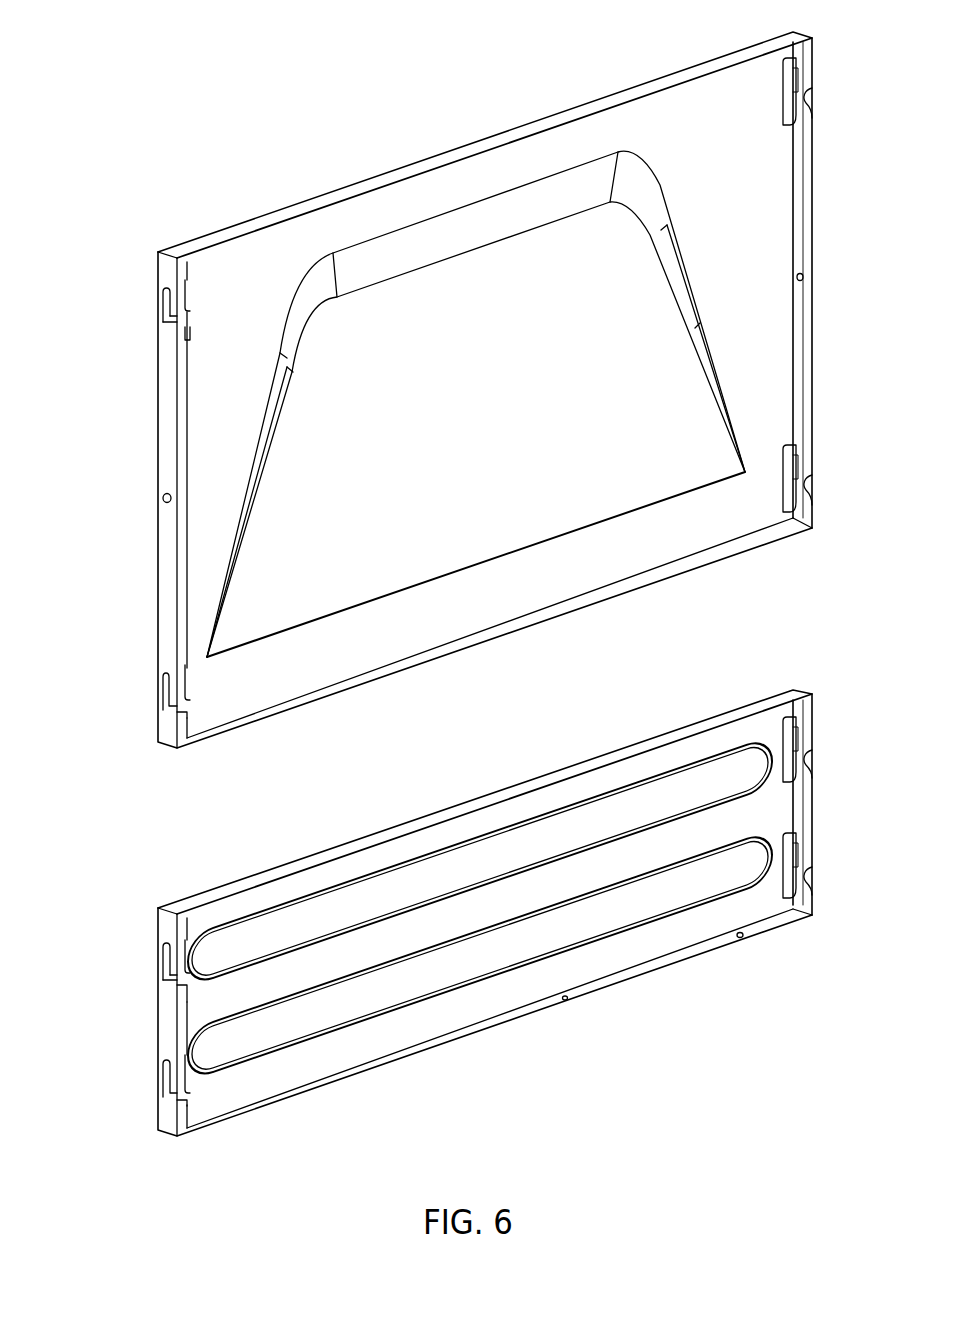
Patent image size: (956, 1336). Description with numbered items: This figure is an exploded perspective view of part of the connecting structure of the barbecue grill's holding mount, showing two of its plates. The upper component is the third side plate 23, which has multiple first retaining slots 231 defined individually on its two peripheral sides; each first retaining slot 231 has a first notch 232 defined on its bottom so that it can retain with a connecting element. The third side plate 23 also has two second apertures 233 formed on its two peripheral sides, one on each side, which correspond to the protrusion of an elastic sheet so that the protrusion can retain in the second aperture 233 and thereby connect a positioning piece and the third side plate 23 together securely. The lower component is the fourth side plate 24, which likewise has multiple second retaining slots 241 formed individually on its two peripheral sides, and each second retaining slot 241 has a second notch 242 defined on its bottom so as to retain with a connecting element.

The third side plate 23 is at (470, 138).
The first retaining slot 231 is at (162, 296).
The first notch 232 is at (158, 318).
The second aperture 233 is at (162, 498).
The fourth side plate 24 is at (548, 770).
The second retaining slot 241 is at (165, 950).
The second notch 242 is at (183, 980).